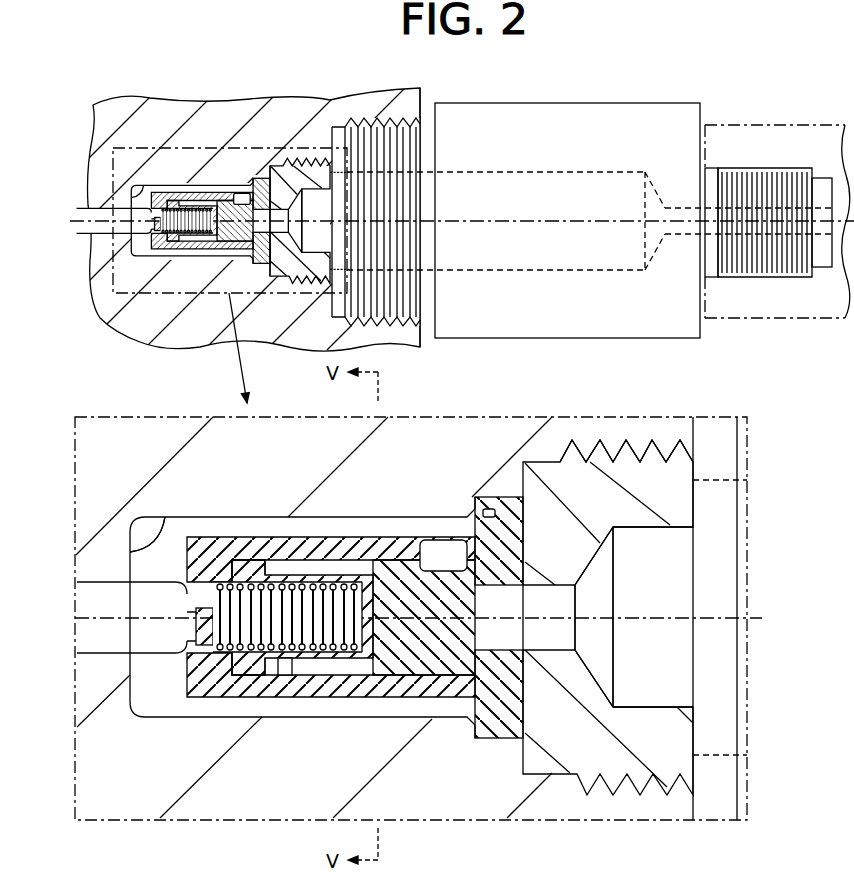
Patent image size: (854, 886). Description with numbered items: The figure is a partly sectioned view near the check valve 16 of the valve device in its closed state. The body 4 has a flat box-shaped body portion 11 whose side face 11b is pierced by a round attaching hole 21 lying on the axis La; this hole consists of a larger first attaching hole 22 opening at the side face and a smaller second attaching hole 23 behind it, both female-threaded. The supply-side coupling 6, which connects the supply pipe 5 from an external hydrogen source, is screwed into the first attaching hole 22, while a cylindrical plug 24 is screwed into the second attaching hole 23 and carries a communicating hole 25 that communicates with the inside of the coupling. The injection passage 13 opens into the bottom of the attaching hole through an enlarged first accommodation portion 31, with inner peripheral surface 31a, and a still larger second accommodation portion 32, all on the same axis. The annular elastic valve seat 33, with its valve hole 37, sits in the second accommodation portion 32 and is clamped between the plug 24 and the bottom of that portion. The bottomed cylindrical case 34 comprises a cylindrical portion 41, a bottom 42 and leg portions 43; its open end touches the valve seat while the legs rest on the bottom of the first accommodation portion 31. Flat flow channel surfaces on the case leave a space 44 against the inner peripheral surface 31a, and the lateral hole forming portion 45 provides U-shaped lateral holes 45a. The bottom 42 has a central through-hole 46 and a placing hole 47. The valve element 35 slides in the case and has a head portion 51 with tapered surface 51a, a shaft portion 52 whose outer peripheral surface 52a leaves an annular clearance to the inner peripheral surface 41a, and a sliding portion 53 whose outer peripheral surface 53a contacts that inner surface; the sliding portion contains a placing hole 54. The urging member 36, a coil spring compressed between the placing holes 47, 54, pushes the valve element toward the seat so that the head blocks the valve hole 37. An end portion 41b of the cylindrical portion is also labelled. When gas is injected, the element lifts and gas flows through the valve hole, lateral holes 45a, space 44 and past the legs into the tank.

The body portion 11 is at (133, 100).
The body 4 is at (255, 232).
The check valve 16 is at (216, 190).
The second attaching hole 23 is at (290, 160).
The attaching hole 21 is at (439, 230).
The first attaching hole 22 is at (327, 128).
The side face 11b is at (420, 97).
The supply-side coupling 6 is at (645, 103).
The supply pipe 5 is at (725, 125).
The axis La is at (502, 223).
The injection passage 13 is at (92, 236).
The plug 24 is at (292, 285).
The communicating hole 25 is at (303, 275).
The first accommodation portion 31 is at (432, 533).
The inner peripheral surface 31a is at (155, 545).
The second accommodation portion 32 is at (508, 503).
The valve seat 33 is at (488, 512).
The case 34 is at (193, 535).
The valve element 35 is at (380, 556).
The urging member 36 is at (252, 582).
The valve hole 37 is at (515, 601).
The cylindrical portion 41 is at (297, 690).
The inner peripheral surface 41a is at (390, 655).
The end portion 41b is at (430, 692).
The bottom 42 is at (203, 690).
The leg portions 43 is at (143, 690).
The space 44 is at (333, 524).
The lateral hole forming portion 45 is at (442, 570).
The lateral hole 45a is at (485, 690).
The through-hole 46 is at (190, 613).
The placing hole 47 is at (190, 640).
The head portion 51 is at (515, 637).
The tapered surface 51a is at (505, 583).
The shaft portion 52 is at (445, 658).
The outer peripheral surface 52a is at (480, 550).
The sliding portion 53 is at (318, 677).
The outer peripheral surface 53a is at (368, 632).
The placing hole 54 is at (285, 660).